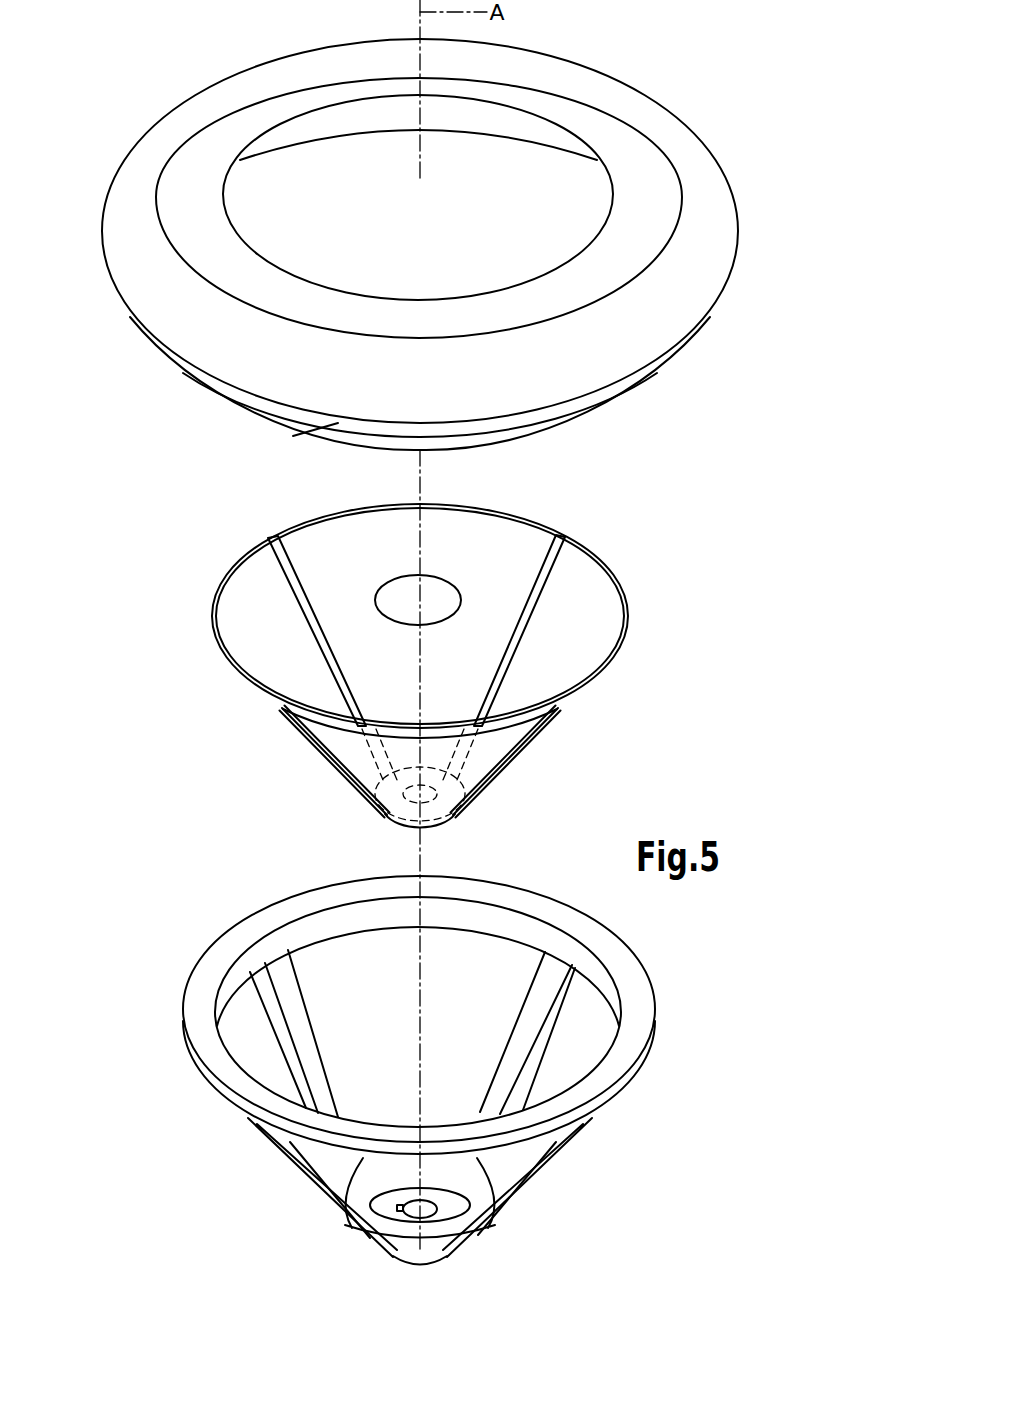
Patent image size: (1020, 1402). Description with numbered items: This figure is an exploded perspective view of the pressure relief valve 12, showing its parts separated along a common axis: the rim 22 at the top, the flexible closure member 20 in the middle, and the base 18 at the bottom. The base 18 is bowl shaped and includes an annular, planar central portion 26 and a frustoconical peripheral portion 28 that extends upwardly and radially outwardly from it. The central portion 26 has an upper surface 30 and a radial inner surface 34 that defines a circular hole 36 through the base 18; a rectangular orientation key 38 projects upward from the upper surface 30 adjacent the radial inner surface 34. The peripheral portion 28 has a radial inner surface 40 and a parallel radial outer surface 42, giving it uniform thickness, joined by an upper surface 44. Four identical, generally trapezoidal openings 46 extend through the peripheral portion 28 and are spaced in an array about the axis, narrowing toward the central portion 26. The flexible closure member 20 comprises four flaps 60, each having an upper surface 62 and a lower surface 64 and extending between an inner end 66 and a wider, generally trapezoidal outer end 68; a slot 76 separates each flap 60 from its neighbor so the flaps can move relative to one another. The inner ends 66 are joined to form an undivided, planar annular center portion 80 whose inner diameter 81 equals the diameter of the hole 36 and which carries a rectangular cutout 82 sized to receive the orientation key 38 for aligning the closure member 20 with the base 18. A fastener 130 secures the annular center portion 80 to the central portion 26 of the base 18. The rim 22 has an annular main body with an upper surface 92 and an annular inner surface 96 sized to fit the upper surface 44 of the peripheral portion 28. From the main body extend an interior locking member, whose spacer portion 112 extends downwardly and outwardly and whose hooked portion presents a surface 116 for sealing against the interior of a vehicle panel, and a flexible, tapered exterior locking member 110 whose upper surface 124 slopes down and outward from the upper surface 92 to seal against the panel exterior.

The pressure relief valve 12 is at (128, 527).
The base 18 is at (183, 1006).
The flexible closure member 20 is at (257, 635).
The rim 22 is at (135, 189).
The central portion 26 is at (383, 1207).
The peripheral portion 28 is at (240, 1114).
The upper surface 30 is at (457, 1212).
The radial inner surface 34 is at (413, 1215).
The circular hole 36 is at (430, 1198).
The orientation key 38 is at (400, 1205).
The radial inner surface 40 is at (547, 990).
The radial outer surface 42 is at (592, 1112).
The upper surface 44 is at (635, 1030).
The openings 46 is at (246, 1024).
The flaps 60 is at (512, 556).
The upper surface 62 is at (340, 560).
The lower surface 64 is at (540, 742).
The inner end 66 is at (397, 773).
The outer end 68 is at (468, 545).
The slot 76 is at (272, 532).
The annular center portion 80 is at (458, 818).
The inner diameter 81 is at (428, 822).
The rectangular cutout 82 is at (385, 808).
The upper surface 92 is at (283, 75).
The annular inner surface 96 is at (517, 97).
The exterior locking member 110 is at (703, 212).
The spacer portion 112 is at (285, 435).
The surface 116 is at (650, 385).
The upper surface 124 is at (700, 255).
The fastener 130 is at (410, 580).